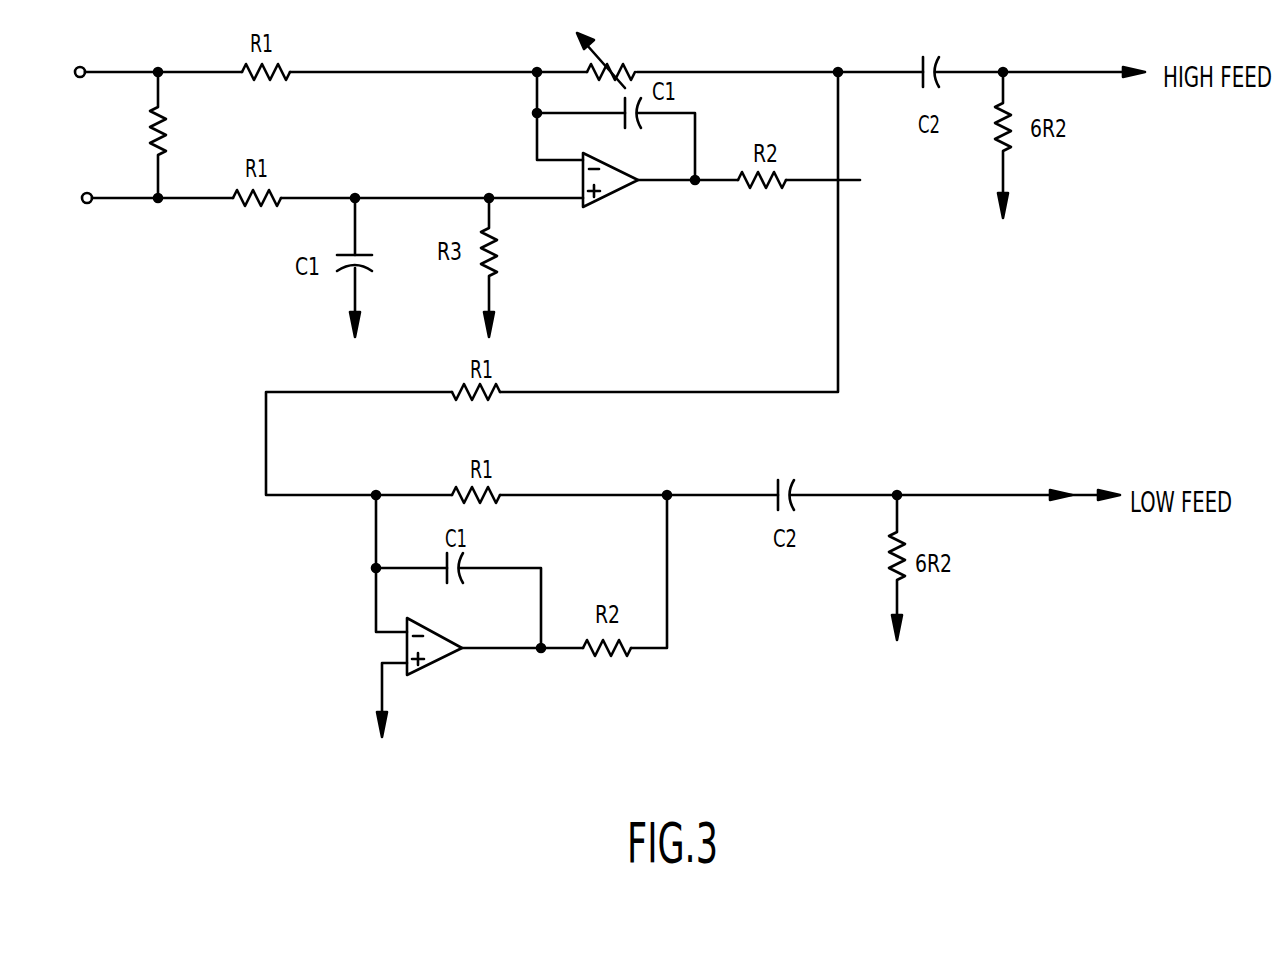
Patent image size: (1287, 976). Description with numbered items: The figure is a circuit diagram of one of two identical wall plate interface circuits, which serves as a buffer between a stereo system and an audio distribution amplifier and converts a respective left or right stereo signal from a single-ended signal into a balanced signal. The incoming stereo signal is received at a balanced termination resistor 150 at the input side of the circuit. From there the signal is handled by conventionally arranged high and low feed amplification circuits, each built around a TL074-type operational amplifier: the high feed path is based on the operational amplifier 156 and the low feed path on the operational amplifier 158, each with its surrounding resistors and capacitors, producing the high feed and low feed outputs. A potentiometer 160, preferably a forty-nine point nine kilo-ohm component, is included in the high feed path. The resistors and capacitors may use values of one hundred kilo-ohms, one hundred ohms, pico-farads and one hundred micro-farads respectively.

The balanced termination resistor 150 is at (148, 120).
The operational amplifier 156 is at (600, 196).
The operational amplifier 158 is at (428, 662).
The potentiometer 160 is at (638, 71).